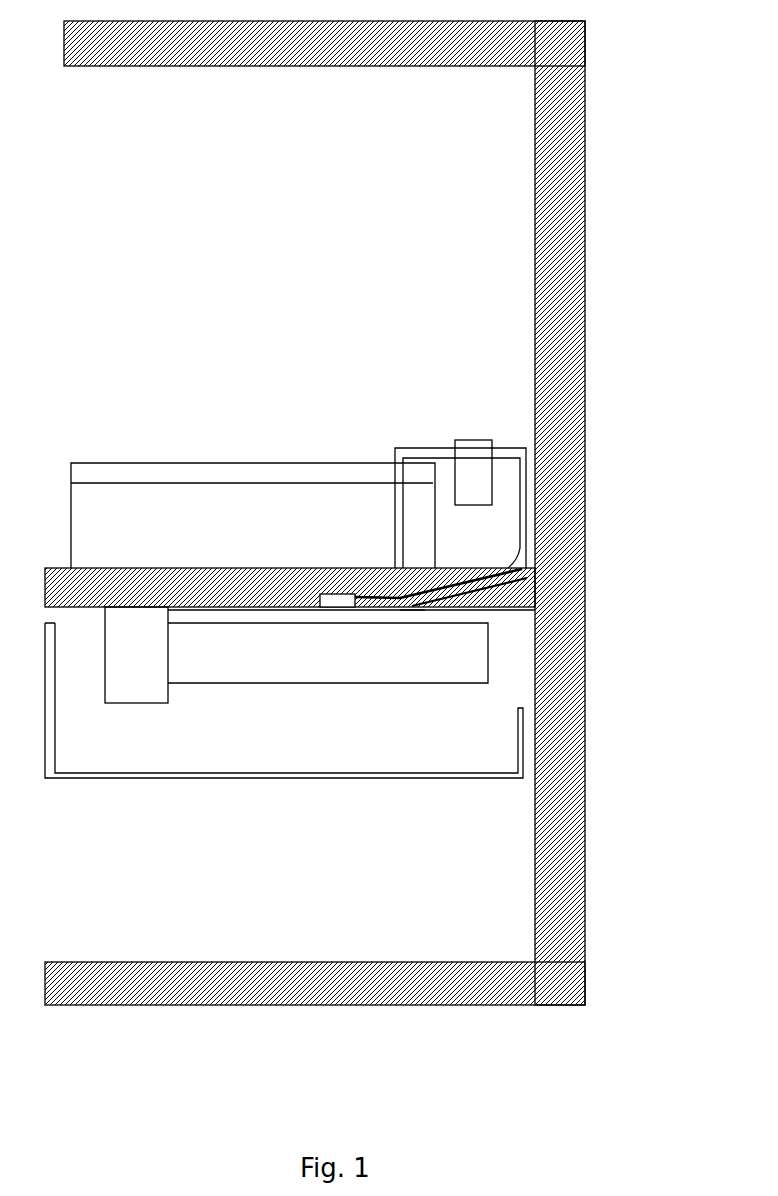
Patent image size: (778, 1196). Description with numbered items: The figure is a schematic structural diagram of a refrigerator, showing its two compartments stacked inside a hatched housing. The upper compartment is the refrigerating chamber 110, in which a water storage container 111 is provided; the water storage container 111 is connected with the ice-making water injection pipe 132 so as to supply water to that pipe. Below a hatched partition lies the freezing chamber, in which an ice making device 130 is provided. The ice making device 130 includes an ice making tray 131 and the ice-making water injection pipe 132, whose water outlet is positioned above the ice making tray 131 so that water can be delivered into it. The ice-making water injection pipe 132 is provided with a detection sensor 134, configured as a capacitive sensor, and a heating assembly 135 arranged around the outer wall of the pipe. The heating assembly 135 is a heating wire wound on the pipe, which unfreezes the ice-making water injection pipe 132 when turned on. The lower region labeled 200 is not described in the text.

The refrigerating chamber 110 is at (483, 297).
The water storage container 111 is at (332, 527).
The ice making device 130 is at (676, 605).
The ice making tray 131 is at (412, 657).
The ice-making water injection pipe 132 is at (412, 611).
The detection sensor 134 is at (527, 560).
The heating assembly 135 is at (528, 580).
The lower chamber 200 is at (508, 905).